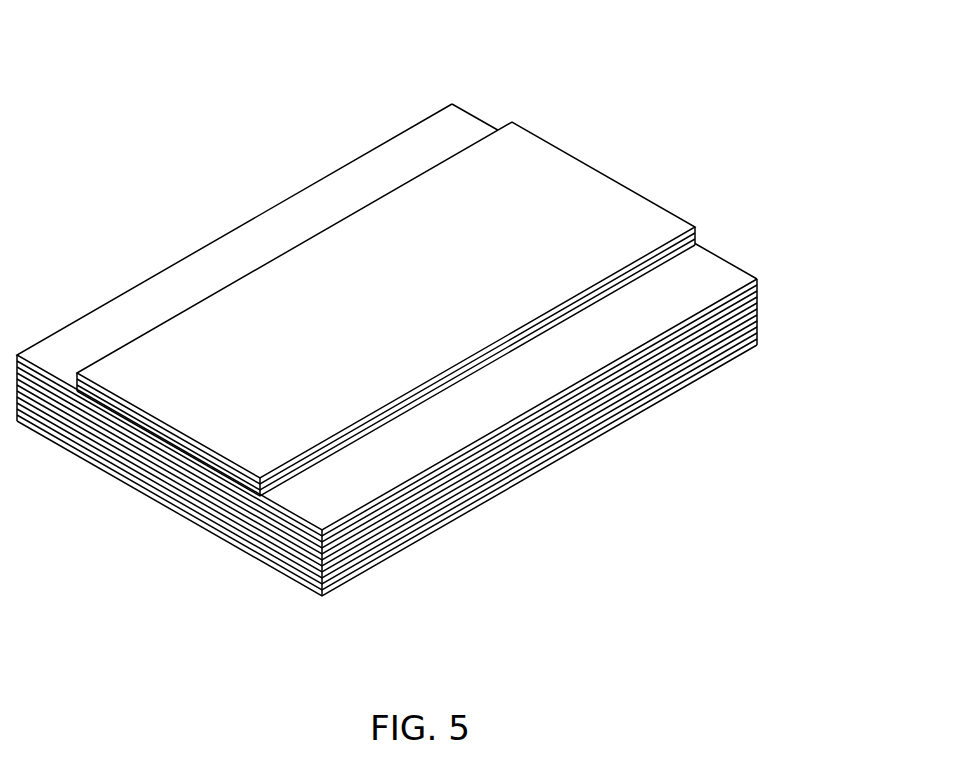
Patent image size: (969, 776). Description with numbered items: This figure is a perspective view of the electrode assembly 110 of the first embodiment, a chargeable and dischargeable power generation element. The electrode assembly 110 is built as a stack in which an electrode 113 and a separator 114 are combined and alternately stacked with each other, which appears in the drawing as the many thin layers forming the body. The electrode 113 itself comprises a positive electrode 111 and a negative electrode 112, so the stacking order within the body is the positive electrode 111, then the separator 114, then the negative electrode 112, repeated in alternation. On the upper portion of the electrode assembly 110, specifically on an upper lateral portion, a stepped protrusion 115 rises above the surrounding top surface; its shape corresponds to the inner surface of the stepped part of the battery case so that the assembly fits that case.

The electrode assembly 110 is at (462, 314).
The positive electrode 111 is at (758, 288).
The negative electrode 112 is at (758, 300).
The electrode 113 is at (462, 437).
The separator 114 is at (758, 282).
The stepped protrusion 115 is at (63, 358).